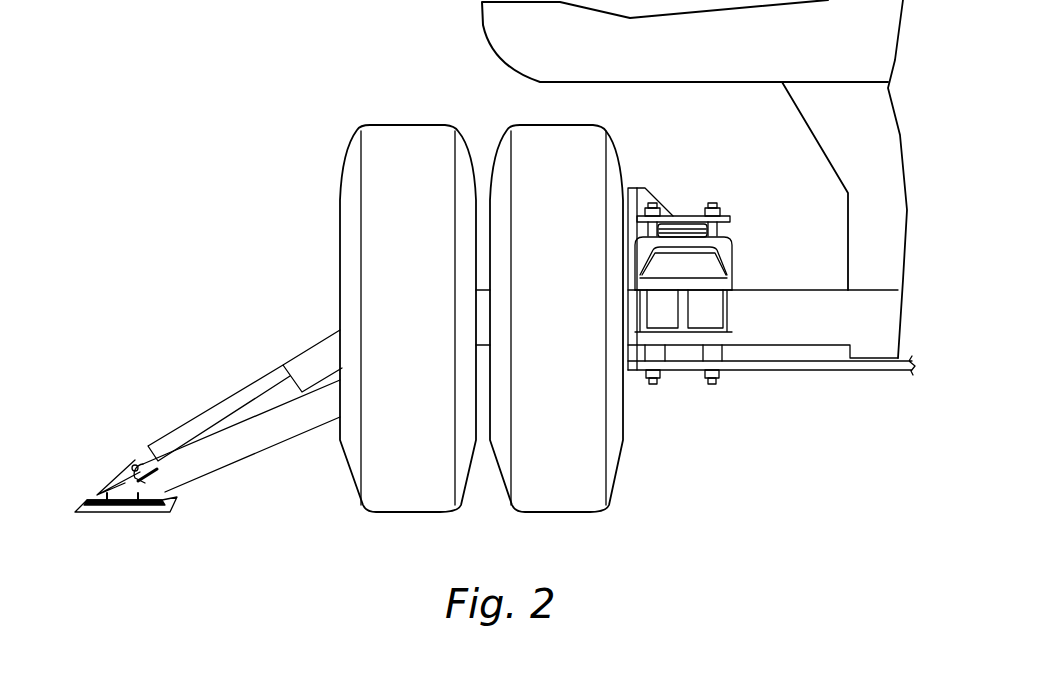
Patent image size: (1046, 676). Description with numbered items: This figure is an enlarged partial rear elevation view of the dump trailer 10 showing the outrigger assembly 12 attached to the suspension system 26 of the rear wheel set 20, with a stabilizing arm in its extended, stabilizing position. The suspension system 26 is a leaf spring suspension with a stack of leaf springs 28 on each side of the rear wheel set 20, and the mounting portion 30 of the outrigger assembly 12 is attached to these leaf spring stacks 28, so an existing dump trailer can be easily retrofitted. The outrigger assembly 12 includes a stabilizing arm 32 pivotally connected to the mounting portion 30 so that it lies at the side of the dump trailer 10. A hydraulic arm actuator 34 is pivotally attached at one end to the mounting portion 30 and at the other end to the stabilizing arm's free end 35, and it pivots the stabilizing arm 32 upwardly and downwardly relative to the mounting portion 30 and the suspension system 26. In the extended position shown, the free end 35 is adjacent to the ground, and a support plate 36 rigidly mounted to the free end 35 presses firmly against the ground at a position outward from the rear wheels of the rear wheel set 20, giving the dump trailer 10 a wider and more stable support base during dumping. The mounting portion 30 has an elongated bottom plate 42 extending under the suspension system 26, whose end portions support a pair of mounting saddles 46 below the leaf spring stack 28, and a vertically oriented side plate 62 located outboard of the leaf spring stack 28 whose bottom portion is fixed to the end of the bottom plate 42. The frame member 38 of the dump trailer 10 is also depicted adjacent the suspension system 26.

The dump trailer 10 is at (468, 40).
The outrigger assembly 12 is at (692, 193).
The rear wheel set 20 is at (390, 485).
The suspension system 26 is at (738, 268).
The leaf spring stack 28 is at (718, 232).
The mounting portion 30 is at (658, 200).
The stabilizing arm 32 is at (207, 458).
The hydraulic arm actuator 34 is at (246, 400).
The free end 35 is at (128, 493).
The support plate 36 is at (97, 512).
The frame 38 is at (882, 147).
The bottom plate 42 is at (780, 366).
The mounting saddles 46 is at (708, 350).
The side plate 62 is at (631, 370).